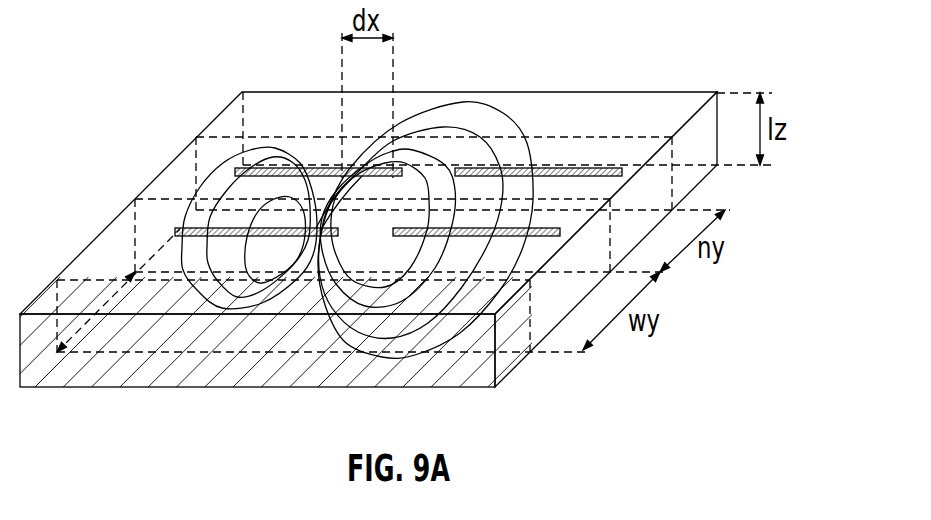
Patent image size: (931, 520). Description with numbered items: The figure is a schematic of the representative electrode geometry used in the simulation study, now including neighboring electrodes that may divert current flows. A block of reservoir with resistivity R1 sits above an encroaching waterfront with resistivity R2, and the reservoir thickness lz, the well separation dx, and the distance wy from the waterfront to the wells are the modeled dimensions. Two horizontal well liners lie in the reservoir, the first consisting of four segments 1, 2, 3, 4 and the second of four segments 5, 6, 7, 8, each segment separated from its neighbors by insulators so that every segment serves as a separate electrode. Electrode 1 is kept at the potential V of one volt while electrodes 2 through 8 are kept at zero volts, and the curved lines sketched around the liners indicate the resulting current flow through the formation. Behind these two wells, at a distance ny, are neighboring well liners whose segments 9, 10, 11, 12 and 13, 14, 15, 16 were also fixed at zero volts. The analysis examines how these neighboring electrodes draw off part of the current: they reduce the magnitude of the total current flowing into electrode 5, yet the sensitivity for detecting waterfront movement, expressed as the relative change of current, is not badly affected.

The well liner segment 1 is at (318, 245).
The well liner segment 2 is at (277, 245).
The well liner segment 3 is at (236, 245).
The well liner segment 4 is at (195, 245).
The well liner segment 5 is at (414, 245).
The well liner segment 6 is at (456, 245).
The well liner segment 7 is at (497, 245).
The well liner segment 8 is at (539, 245).
The neighboring well liner segment 9 is at (381, 184).
The neighboring well liner segment 10 is at (340, 184).
The neighboring well liner segment 11 is at (298, 184).
The neighboring well liner segment 12 is at (256, 184).
The neighboring well liner segment 13 is at (476, 184).
The neighboring well liner segment 14 is at (518, 184).
The neighboring well liner segment 15 is at (559, 184).
The neighboring well liner segment 16 is at (601, 184).
The reservoir resistivity R1 is at (368, 239).
The waterfront resistivity R2 is at (313, 332).
The electrode potential V is at (250, 212).